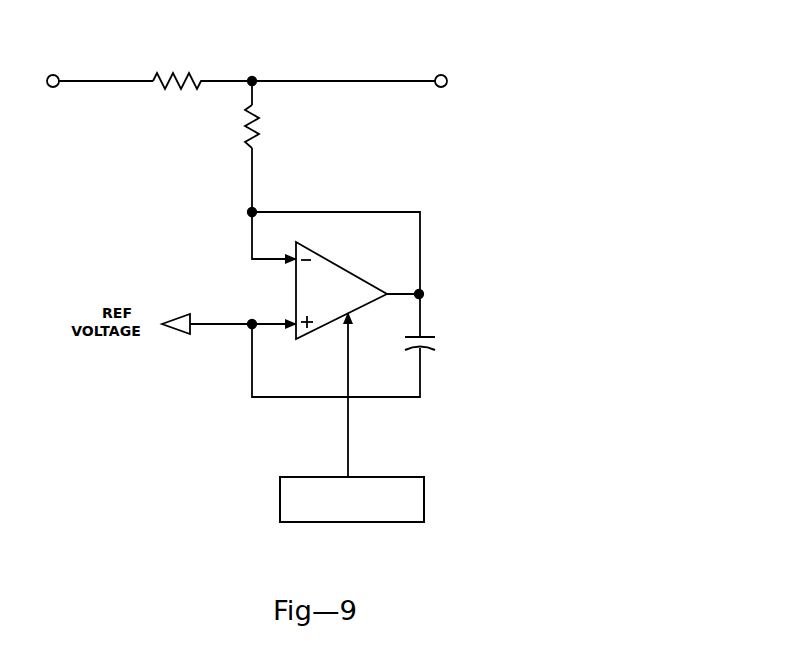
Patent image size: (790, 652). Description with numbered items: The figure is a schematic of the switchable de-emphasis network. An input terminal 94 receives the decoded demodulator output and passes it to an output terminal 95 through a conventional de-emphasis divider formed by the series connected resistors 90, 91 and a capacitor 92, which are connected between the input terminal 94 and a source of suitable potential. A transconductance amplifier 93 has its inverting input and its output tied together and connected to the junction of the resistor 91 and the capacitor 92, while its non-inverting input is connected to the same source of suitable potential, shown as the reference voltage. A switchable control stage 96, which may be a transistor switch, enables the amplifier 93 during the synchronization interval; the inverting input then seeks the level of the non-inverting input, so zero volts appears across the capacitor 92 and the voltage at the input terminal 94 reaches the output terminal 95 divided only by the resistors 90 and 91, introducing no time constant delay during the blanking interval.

The resistor 90 is at (179, 76).
The resistor 91 is at (261, 131).
The capacitor 92 is at (437, 347).
The transconductance amplifier 93 is at (348, 271).
The input terminal 94 is at (53, 75).
The output terminal 95 is at (441, 75).
The switchable control stage 96 is at (424, 500).